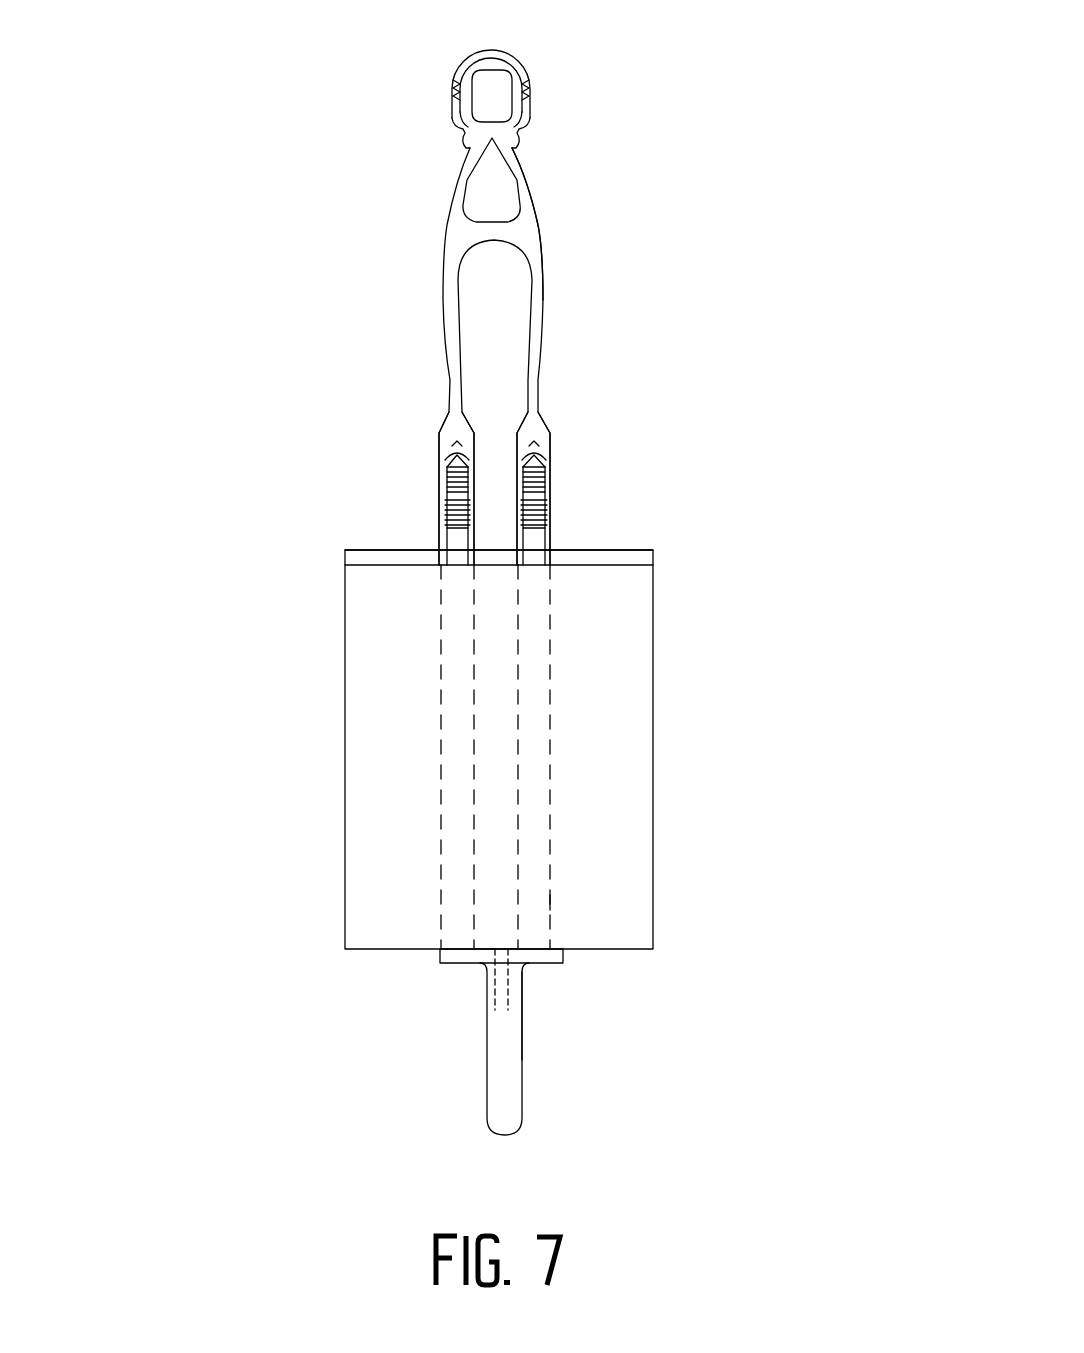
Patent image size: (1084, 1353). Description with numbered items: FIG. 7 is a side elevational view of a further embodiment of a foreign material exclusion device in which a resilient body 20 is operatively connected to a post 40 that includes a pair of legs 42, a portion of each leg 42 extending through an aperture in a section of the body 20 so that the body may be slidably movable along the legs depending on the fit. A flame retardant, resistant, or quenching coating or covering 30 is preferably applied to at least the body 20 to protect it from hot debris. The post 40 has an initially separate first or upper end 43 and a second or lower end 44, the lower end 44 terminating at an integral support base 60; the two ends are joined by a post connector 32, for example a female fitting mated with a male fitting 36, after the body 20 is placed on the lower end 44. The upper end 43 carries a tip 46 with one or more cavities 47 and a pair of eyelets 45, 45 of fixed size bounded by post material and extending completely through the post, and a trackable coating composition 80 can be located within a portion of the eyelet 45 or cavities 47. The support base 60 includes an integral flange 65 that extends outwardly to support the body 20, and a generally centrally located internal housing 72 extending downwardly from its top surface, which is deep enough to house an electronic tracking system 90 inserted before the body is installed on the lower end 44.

The body 20 is at (345, 747).
The flame retardant coating or covering 30 is at (388, 548).
The post connector 32 is at (549, 505).
The male fitting 36 is at (548, 528).
The post 40 is at (543, 320).
The legs 42 is at (448, 377).
The upper end 43 is at (543, 235).
The lower end 44 is at (558, 902).
The eyelet 45 is at (468, 180).
The tip 46 is at (490, 55).
The cavity 47 is at (457, 98).
The trackable coating composition 80 is at (528, 96).
The support base 60 is at (522, 988).
The flange 65 is at (438, 967).
The internal housing 72 is at (520, 1015).
The electronic tracking system 90 is at (497, 1000).